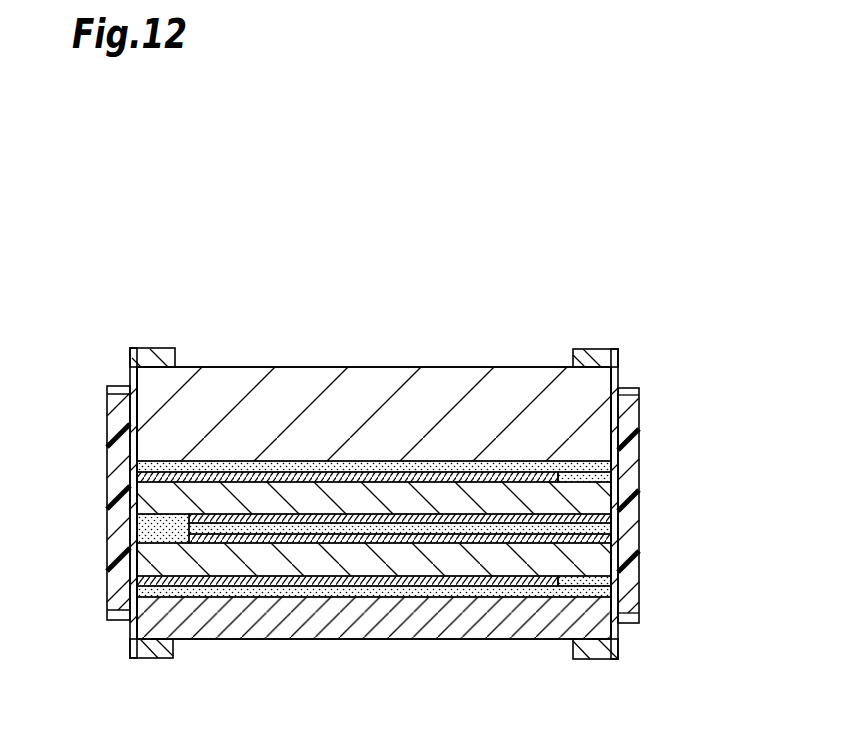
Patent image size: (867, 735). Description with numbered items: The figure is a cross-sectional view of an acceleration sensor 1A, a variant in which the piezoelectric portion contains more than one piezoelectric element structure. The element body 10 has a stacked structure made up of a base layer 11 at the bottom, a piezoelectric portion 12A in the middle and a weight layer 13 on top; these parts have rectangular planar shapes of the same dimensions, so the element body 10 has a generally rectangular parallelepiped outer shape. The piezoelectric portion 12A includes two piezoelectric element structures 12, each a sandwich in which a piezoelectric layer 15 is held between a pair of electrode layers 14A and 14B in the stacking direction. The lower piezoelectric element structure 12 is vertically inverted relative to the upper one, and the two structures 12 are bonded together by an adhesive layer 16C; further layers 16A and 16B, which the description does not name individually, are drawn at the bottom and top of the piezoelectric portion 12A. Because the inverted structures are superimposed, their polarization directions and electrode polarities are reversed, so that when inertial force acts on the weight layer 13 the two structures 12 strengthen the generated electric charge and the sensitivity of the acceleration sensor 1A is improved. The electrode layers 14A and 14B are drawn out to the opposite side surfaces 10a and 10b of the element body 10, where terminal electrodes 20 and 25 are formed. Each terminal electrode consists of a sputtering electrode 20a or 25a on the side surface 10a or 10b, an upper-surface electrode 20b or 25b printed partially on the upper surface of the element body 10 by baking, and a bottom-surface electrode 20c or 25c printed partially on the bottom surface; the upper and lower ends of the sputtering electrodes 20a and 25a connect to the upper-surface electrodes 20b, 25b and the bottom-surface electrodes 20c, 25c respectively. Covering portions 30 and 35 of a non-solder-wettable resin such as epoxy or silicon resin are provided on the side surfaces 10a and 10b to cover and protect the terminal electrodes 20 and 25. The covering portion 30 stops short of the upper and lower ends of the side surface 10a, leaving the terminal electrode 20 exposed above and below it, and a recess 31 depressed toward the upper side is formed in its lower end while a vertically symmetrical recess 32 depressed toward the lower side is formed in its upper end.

The acceleration sensor 1A is at (208, 204).
The element body 10 is at (233, 367).
The side surface 10a is at (612, 632).
The side surface 10b is at (128, 637).
The base layer 11 is at (425, 640).
The weight layer 13 is at (424, 372).
The piezoelectric element structure 12 is at (708, 443).
The piezoelectric portion 12A is at (758, 465).
The lower electrode layer 14A is at (598, 500).
The upper electrode layer 14B is at (585, 468).
The piezoelectric layer 15 is at (586, 478).
The internal electrode 16A is at (618, 612).
The internal electrode 16B is at (578, 463).
The adhesive layer 16C is at (600, 528).
The terminal electrode 20 is at (604, 349).
The sputtering electrode 20a is at (618, 380).
The upper-surface electrode 20b is at (582, 349).
The bottom-surface electrode 20c is at (594, 660).
The terminal electrode 25 is at (142, 349).
The sputtering electrode 25a is at (130, 378).
The upper-surface electrode 25b is at (154, 348).
The bottom-surface electrode 25c is at (157, 658).
The covering portion 30 is at (639, 410).
The recess 31 is at (632, 622).
The recess 32 is at (630, 390).
The covering portion 35 is at (107, 418).